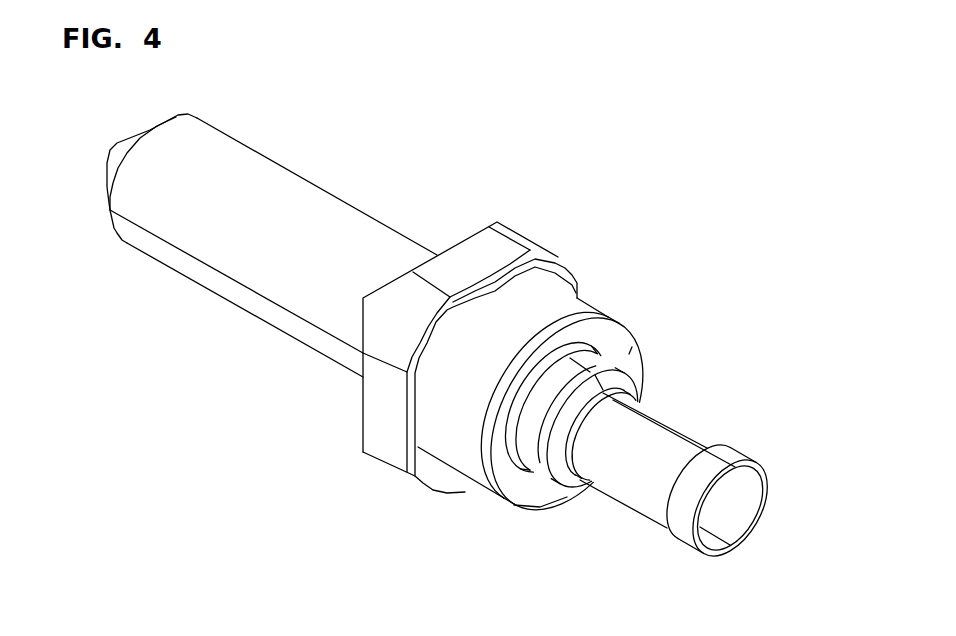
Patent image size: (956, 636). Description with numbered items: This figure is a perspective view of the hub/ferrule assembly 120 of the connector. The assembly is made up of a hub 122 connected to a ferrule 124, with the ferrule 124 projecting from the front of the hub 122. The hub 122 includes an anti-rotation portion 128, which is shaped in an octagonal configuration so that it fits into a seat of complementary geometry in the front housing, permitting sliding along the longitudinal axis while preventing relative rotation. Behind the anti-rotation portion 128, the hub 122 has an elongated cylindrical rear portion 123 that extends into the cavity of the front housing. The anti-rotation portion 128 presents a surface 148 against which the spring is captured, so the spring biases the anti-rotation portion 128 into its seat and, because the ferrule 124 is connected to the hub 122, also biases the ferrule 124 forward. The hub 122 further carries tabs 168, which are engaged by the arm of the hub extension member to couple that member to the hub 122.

The hub/ferrule assembly 120 is at (633, 243).
The hub 122 is at (672, 419).
The cylindrical rear portion 123 is at (466, 455).
The ferrule 124 is at (220, 160).
The anti-rotation portion 128 is at (472, 260).
The surface 148 is at (600, 333).
The tabs 168 is at (736, 466).